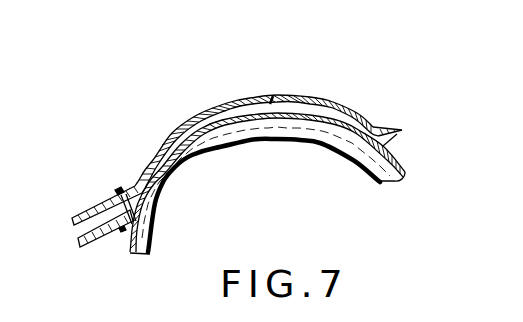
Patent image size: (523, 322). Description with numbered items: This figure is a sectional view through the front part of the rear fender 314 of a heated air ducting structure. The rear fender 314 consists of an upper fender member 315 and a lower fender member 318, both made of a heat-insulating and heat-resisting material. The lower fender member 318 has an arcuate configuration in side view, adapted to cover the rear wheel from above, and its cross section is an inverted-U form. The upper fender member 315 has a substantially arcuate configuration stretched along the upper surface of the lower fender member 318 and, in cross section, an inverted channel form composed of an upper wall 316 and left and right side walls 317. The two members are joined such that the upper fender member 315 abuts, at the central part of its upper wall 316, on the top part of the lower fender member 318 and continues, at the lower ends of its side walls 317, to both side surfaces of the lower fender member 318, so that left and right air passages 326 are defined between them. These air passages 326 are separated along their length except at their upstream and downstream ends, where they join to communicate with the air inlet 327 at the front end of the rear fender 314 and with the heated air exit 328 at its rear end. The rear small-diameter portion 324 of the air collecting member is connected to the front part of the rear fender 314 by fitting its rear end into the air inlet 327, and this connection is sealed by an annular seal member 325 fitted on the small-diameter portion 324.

The rear fender 314 is at (248, 158).
The upper fender member 315 is at (188, 117).
The upper wall 316 is at (237, 100).
The side wall 317 is at (290, 108).
The lower fender member 318 is at (253, 141).
The rear small-diameter portion 324 is at (90, 209).
The annular seal member 325 is at (118, 189).
The air passage 326 is at (272, 97).
The air inlet 327 is at (113, 231).
The heated air exit 328 is at (395, 140).